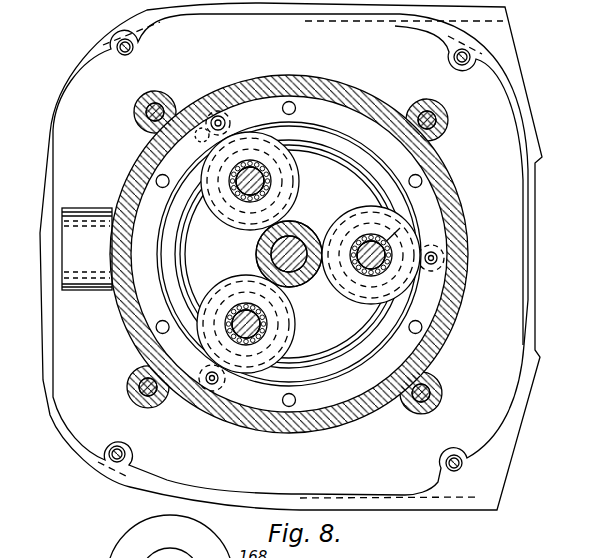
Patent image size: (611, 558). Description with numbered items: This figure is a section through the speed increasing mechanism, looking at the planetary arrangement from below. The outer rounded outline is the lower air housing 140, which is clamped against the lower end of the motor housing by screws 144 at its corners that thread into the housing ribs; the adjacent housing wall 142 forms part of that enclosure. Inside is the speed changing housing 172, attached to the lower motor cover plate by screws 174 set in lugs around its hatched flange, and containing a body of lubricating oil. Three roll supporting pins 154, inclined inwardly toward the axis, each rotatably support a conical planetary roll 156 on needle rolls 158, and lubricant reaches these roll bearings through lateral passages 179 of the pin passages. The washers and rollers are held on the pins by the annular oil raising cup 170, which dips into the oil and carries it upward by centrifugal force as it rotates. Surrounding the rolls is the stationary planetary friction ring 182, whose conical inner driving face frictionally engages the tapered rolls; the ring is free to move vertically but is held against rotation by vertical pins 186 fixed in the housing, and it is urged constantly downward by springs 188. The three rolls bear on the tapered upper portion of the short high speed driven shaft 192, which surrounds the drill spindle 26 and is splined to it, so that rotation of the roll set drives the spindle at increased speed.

The drill spindle 26 is at (298, 233).
The lower air housing 140 is at (50, 386).
The housing 142 is at (520, 63).
The screws 144 is at (114, 446).
The roll supporting pins 154 is at (258, 197).
The conical planetary roll 156 is at (402, 230).
The needle rolls 158 is at (268, 181).
The oil raising cup 170 is at (333, 160).
The speed changing housing 172 is at (220, 408).
The screws 174 is at (140, 387).
The lateral passages 179 is at (240, 172).
The stationary planetary friction ring 182 is at (140, 190).
The vertical pins 186 is at (155, 323).
The springs 188 is at (437, 257).
The high speed driven shaft 192 is at (292, 284).